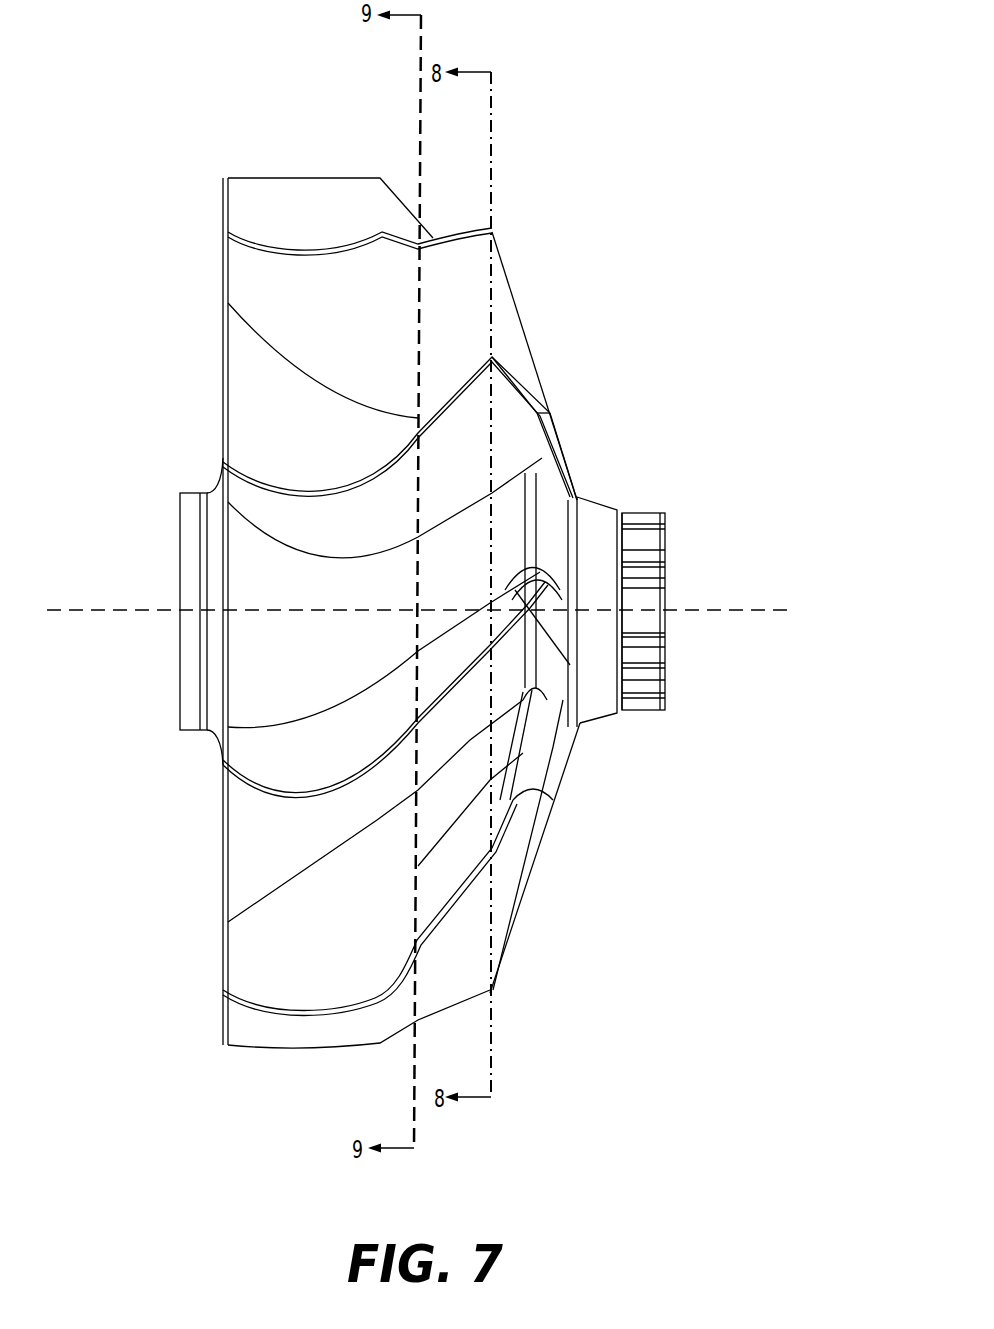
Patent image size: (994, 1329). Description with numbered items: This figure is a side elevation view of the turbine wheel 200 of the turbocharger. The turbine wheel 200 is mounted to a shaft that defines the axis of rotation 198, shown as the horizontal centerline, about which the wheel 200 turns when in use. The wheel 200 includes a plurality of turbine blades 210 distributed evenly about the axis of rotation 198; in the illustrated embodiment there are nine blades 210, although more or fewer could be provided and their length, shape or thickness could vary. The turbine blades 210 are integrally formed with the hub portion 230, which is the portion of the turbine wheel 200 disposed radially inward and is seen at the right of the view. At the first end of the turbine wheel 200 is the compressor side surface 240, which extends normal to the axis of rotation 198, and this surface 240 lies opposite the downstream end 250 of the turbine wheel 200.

The turbine wheel 200 is at (363, 546).
The turbine blades 210 is at (368, 298).
The compressor side surface 240 is at (227, 367).
The hub portion 230 is at (604, 512).
The downstream end 250 is at (592, 854).
The axis of rotation 198 is at (723, 602).